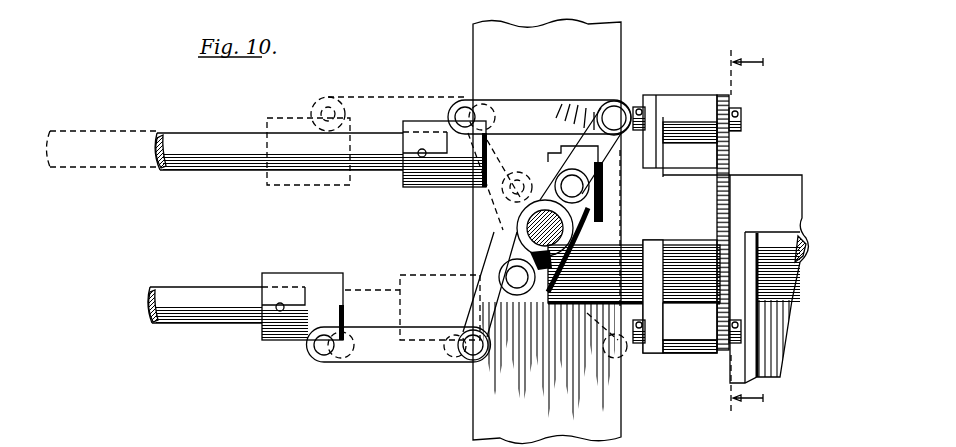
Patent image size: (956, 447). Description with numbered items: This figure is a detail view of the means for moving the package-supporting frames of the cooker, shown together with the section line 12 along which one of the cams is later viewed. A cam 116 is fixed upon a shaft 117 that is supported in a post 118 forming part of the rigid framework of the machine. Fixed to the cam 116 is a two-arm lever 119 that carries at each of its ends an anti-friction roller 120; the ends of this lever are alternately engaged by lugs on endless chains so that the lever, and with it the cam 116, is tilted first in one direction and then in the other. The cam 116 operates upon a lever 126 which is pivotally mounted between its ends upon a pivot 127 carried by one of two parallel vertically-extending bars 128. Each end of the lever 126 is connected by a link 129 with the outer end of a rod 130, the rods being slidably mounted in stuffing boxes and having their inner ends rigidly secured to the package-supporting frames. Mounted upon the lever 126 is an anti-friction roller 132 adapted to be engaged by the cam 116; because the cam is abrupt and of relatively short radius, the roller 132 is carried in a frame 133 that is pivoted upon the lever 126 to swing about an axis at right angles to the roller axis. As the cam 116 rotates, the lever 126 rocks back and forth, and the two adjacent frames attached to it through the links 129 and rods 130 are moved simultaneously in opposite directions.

The section line 12- 12 is at (745, 50).
The cam 116 is at (640, 242).
The shaft 117 is at (806, 200).
The post 118 is at (812, 394).
The two-arm lever 119 is at (720, 148).
The anti-friction roller 120 is at (708, 82).
The lever 126 is at (590, 122).
The pivot 127 is at (523, 230).
The bar 128 is at (473, 51).
The link 129 is at (528, 89).
The rod 130 is at (240, 116).
The anti-friction roller 132 is at (600, 198).
The frame 133 is at (645, 192).